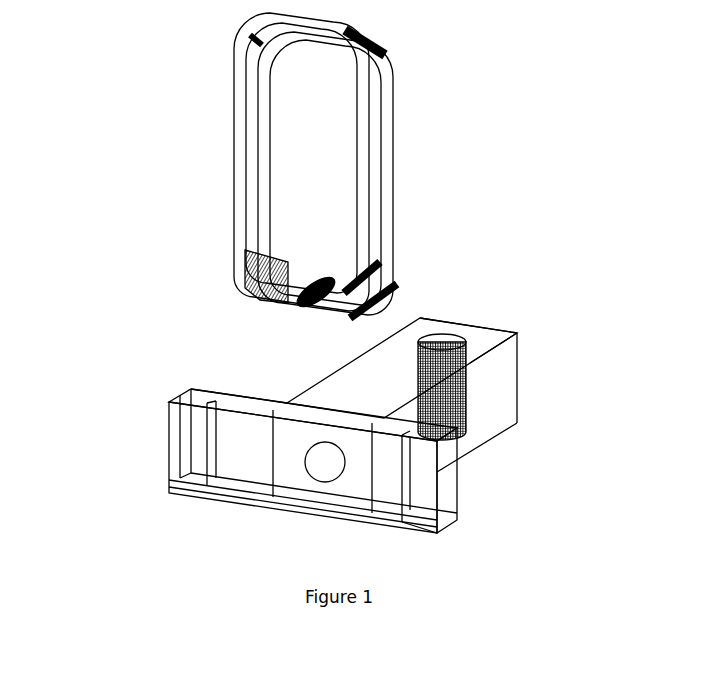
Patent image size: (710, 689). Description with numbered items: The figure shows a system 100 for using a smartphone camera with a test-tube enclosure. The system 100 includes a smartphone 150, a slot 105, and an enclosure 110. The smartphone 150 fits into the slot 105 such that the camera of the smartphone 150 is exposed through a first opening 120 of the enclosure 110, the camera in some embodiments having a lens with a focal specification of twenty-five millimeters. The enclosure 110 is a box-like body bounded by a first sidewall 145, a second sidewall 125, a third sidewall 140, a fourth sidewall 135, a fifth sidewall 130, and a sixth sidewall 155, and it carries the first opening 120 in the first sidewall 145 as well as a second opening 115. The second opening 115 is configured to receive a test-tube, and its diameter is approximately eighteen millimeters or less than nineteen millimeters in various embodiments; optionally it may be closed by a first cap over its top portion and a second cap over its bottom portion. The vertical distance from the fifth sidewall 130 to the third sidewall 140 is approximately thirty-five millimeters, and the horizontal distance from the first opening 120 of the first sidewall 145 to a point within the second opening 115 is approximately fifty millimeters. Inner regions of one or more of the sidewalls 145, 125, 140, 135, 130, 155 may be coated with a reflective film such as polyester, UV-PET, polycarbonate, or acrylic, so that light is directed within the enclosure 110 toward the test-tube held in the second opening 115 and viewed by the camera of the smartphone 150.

The system 100 is at (586, 59).
The slot 105 is at (167, 423).
The enclosure 110 is at (406, 300).
The second opening 115 is at (466, 402).
The first opening 120 is at (345, 453).
The second sidewall 125 is at (326, 381).
The fifth sidewall 130 is at (476, 340).
The fourth sidewall 135 is at (500, 380).
The third sidewall 140 is at (466, 442).
The first sidewall 145 is at (294, 428).
The smartphone 150 is at (283, 84).
The sixth sidewall 155 is at (512, 356).